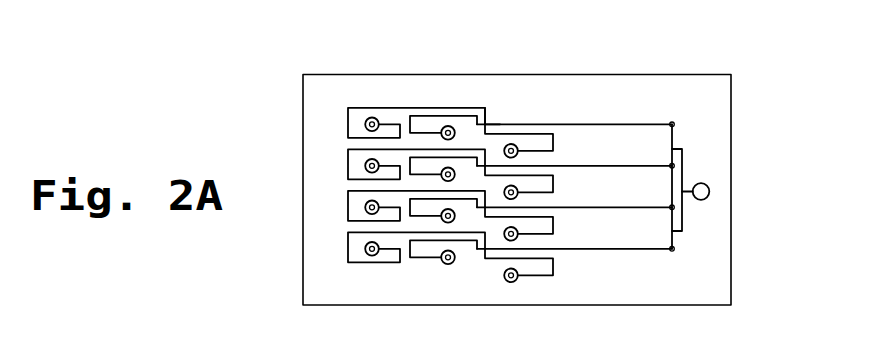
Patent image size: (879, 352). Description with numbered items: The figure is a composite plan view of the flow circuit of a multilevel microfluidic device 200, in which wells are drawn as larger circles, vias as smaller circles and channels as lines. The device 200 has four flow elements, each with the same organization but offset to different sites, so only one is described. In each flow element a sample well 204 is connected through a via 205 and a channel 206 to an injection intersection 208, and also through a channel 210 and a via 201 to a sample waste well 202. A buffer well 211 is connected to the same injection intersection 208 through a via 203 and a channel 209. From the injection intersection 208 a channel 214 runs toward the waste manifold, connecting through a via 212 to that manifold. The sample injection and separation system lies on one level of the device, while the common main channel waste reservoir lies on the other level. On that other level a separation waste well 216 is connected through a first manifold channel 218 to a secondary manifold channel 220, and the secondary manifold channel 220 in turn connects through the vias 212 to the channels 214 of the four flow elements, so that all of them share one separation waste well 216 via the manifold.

The device 200 is at (714, 320).
The via 201 is at (370, 125).
The sample waste well 202 is at (365, 122).
The via 203 is at (449, 127).
The sample well 204 is at (514, 144).
The via 205 is at (512, 147).
The channel 206 is at (556, 135).
The injection intersection 208 is at (486, 124).
The channel 209 is at (425, 116).
The channel 210 is at (373, 107).
The buffer well 211 is at (453, 126).
The via 212 is at (672, 122).
The channel 214 is at (625, 124).
The separation waste well 216 is at (708, 197).
The first manifold channel 218 is at (682, 168).
The secondary manifold channel 220 is at (673, 139).